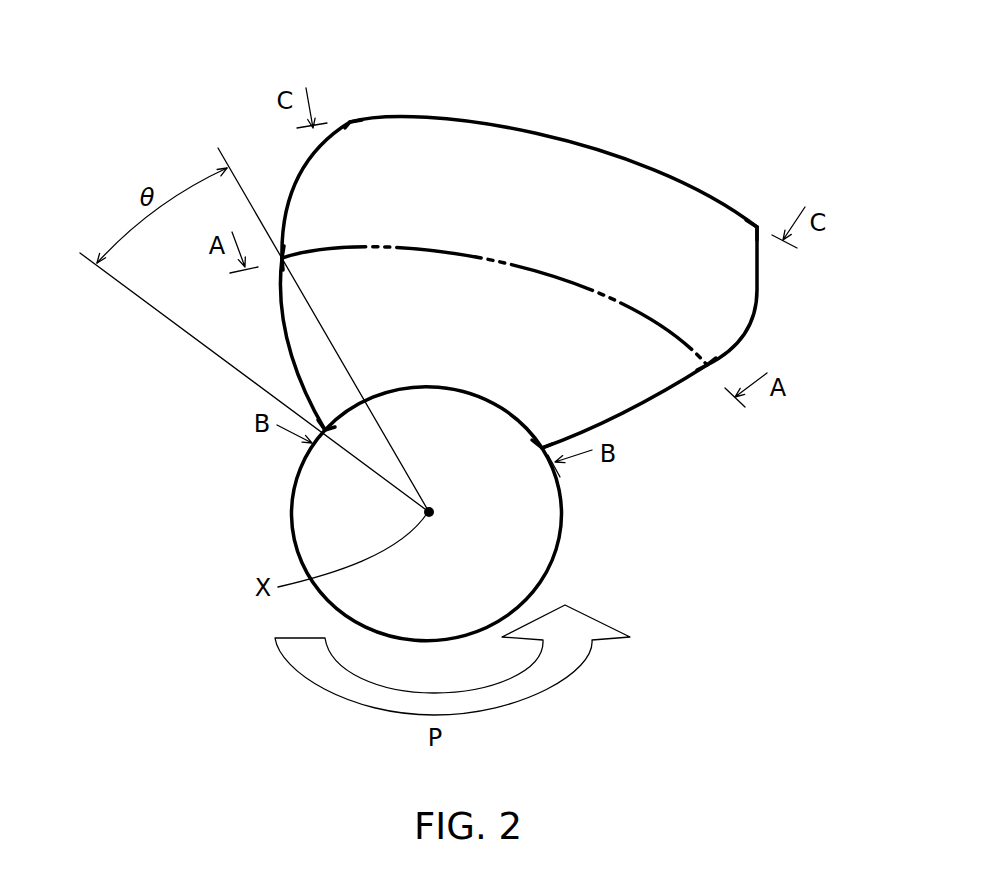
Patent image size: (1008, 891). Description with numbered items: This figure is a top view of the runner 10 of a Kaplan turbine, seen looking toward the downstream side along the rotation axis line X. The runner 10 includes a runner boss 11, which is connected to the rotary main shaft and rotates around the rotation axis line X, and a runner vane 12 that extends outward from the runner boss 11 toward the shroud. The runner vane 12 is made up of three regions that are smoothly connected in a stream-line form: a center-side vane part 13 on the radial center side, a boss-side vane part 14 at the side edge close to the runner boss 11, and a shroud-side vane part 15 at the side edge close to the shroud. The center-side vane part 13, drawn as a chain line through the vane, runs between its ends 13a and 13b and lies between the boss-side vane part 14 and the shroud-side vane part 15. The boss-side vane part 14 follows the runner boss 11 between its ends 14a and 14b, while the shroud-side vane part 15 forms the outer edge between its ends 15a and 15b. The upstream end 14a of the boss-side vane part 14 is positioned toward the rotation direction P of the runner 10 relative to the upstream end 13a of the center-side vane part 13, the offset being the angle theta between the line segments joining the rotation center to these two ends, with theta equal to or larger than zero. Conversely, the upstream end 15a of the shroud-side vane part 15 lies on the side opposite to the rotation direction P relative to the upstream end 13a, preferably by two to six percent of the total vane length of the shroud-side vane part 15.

The runner 10 is at (663, 117).
The runner boss 11 is at (315, 517).
The runner vane 12 is at (767, 283).
The center-side vane part 13 is at (563, 280).
The upstream end of the center-side vane part 13a is at (280, 258).
The second end of boundary line 13b is at (707, 367).
The boss-side vane part 14 is at (432, 387).
The upstream end of the boss-side vane part 14a is at (325, 432).
The second end of contact surface 14b is at (540, 450).
The shroud-side vane part 15 is at (675, 177).
The upstream end of the shroud-side vane part 15a is at (350, 122).
The second end of outer surface 15b is at (757, 227).